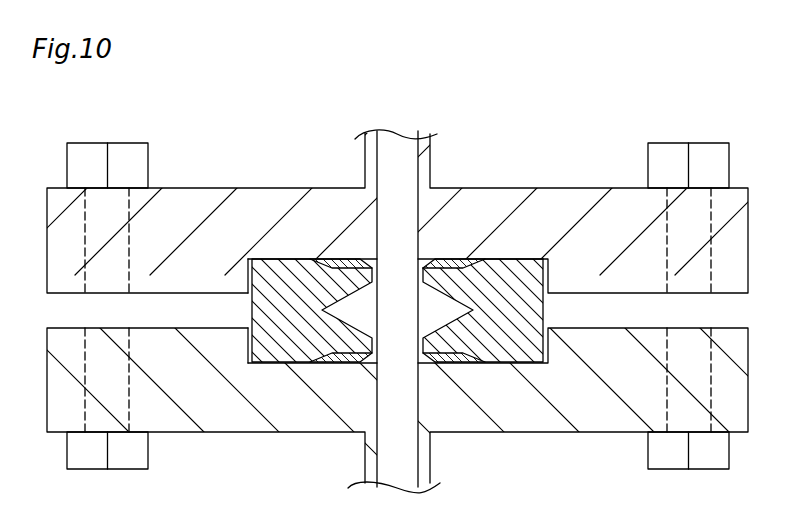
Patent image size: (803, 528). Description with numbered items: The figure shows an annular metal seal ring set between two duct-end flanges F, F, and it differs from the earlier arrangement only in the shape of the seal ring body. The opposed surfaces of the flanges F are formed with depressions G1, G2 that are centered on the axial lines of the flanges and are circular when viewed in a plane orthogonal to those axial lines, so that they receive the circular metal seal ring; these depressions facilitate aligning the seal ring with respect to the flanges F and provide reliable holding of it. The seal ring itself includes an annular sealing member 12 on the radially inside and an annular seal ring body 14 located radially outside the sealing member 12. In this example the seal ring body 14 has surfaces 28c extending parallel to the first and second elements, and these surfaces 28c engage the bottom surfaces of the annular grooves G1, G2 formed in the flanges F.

The flange F is at (165, 187).
The depression G1 is at (250, 258).
The depression G2 is at (248, 364).
The surface 28c is at (503, 258).
The sealing member 12 is at (451, 250).
The seal ring body 14 is at (525, 250).